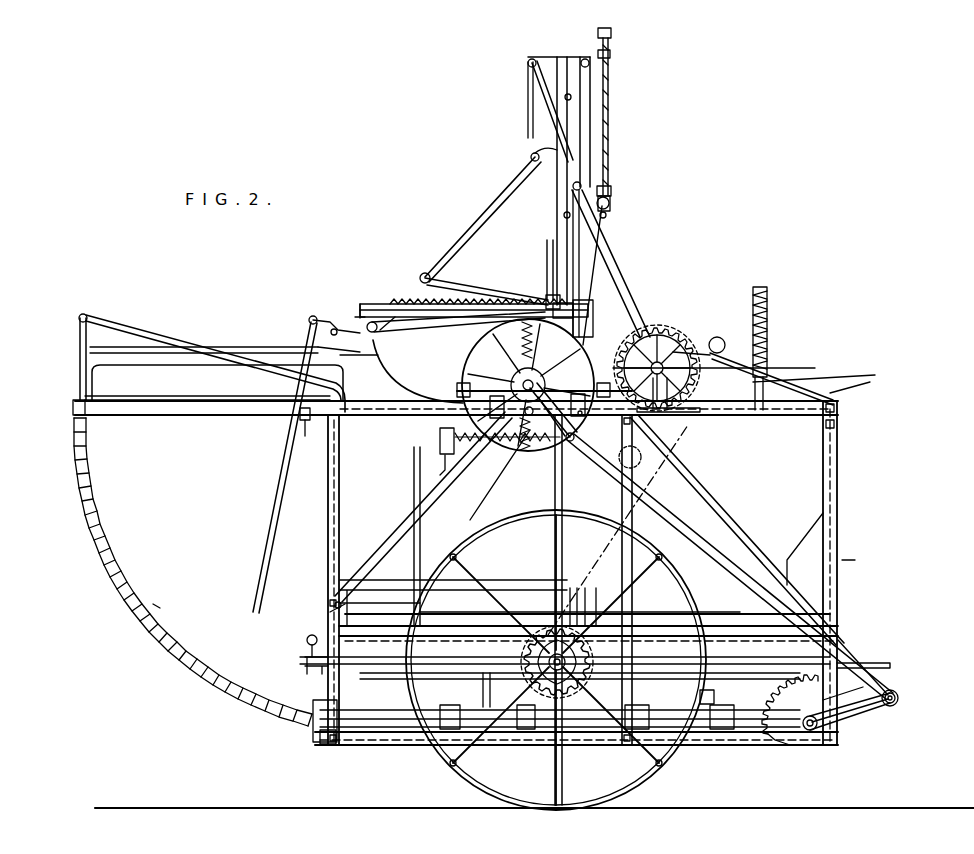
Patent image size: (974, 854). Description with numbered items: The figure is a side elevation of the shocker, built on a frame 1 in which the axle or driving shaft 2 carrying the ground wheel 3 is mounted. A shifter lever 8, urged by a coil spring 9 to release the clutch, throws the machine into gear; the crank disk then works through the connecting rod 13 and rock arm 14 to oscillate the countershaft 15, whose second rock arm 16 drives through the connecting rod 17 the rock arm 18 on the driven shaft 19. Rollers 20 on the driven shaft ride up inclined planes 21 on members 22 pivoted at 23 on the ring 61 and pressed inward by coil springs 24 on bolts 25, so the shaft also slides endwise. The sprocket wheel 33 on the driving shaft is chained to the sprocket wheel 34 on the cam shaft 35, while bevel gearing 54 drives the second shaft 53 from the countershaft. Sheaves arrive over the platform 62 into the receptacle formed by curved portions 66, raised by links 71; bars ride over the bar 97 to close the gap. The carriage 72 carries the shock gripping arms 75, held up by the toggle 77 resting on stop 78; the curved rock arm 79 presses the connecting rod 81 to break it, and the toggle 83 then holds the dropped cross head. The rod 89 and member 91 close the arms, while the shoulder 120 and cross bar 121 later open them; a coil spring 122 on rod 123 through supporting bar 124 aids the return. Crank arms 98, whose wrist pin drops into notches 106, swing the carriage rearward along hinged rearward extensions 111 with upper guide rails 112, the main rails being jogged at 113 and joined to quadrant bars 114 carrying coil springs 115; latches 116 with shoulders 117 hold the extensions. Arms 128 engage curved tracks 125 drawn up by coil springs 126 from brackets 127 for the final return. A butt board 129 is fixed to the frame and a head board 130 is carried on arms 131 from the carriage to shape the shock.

The frame 1 is at (840, 598).
The axle or driving shaft 2 is at (550, 650).
The ground wheel 3 is at (455, 775).
The shifter lever 8 is at (309, 638).
The coil spring 9 is at (305, 663).
The connecting rod 13 is at (872, 662).
The rock arm 14 is at (863, 700).
The countershaft 15 is at (830, 733).
The second rock arm 16 is at (895, 700).
The connecting rod 17 is at (693, 532).
The rock arm 18 is at (554, 455).
The driven shaft 19 is at (527, 395).
The projections 20 is at (440, 381).
The inclined planes 21 is at (584, 312).
The members 22 is at (520, 280).
The pivot 23 is at (470, 353).
The coil springs 24 is at (556, 300).
The bolts 25 is at (527, 415).
The sprocket wheel 33 is at (540, 690).
The sprocket wheel 34 is at (682, 333).
The cam shaft 35 is at (724, 369).
The second shaft 53 is at (377, 712).
The bevel gearing 54 is at (772, 738).
The ring 61 is at (586, 341).
The platform 62 is at (395, 545).
The curved portion 66 is at (716, 592).
The links 71 is at (484, 694).
The carriage 72 is at (557, 200).
The shock gripping arms 75 is at (582, 330).
The toggle 77 is at (548, 268).
The stop 78 is at (612, 211).
The curved rock arm 79 is at (368, 328).
The connecting rod 81 is at (412, 330).
The toggle 83 is at (485, 294).
The rod 89 is at (608, 85).
The member 91 is at (611, 54).
The bar 97 is at (357, 602).
The crank arms 98 is at (592, 337).
The notches 106 is at (580, 55).
The rearward extensions 111 is at (226, 396).
The upper guide rail 112 is at (190, 352).
The jog 113 is at (240, 347).
The quadrant bars 114 is at (122, 556).
The coil springs 115 is at (156, 604).
The latches 116 is at (283, 488).
The shoulders 117 is at (306, 426).
The shoulder 120 is at (639, 180).
The cross bar 121 is at (608, 184).
The coil spring 122 is at (437, 298).
The rod 123 is at (360, 306).
The supporting bar 124 is at (380, 316).
The curved tracks 125 is at (825, 379).
The coil springs 126 is at (755, 348).
The bracket 127 is at (767, 300).
The arm 128 is at (725, 345).
The butt board 129 is at (790, 568).
The head board 130 is at (425, 585).
The arms 131 is at (438, 442).